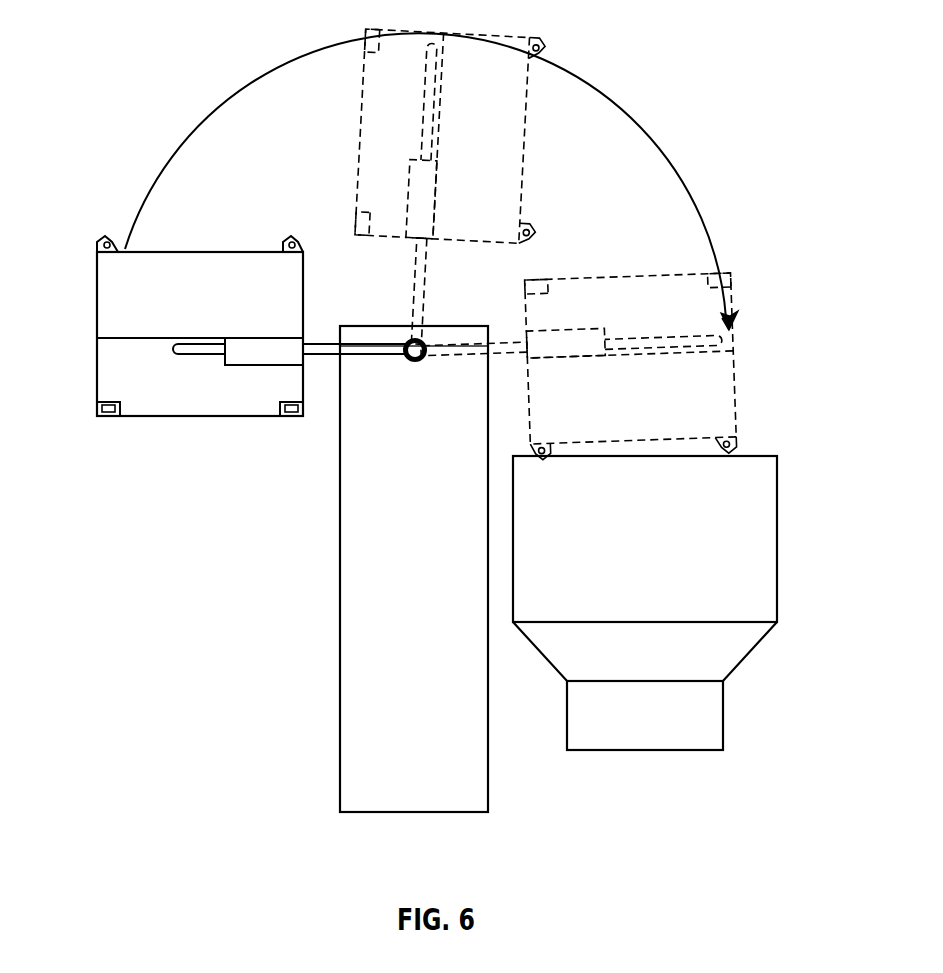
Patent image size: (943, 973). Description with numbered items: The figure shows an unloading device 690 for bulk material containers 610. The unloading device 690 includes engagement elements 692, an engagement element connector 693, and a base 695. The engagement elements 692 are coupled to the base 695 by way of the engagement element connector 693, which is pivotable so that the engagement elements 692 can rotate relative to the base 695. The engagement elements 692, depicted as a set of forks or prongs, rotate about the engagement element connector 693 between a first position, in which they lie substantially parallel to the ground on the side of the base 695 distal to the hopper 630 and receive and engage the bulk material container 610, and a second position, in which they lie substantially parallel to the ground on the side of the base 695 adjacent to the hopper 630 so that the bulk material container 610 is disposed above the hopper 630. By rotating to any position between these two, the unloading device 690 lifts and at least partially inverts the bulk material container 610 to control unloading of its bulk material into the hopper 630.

The bulk material container 610 is at (97, 383).
The hopper 630 is at (777, 507).
The unloading device 690 is at (146, 45).
The engagement elements 692 is at (370, 343).
The engagement element connector 693 is at (421, 340).
The base 695 is at (340, 640).